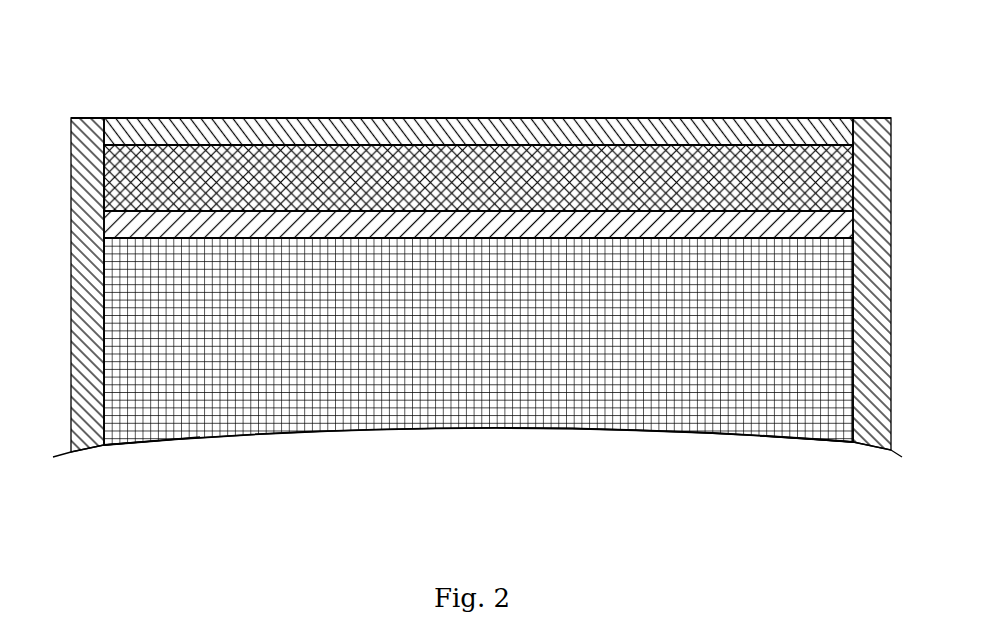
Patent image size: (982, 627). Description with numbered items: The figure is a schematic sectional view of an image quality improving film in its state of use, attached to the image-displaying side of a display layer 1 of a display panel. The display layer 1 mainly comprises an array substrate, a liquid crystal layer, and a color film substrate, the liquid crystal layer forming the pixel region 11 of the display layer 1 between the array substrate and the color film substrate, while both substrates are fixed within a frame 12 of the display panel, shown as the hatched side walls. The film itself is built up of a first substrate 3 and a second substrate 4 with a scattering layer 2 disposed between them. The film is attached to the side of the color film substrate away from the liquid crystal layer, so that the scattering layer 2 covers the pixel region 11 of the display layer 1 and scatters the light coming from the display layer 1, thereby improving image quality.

The display layer 1 is at (478, 391).
The pixel region 11 is at (770, 383).
The frame 12 is at (123, 442).
The scattering layer 2 is at (580, 160).
The first substrate 3 is at (357, 140).
The second substrate 4 is at (232, 222).